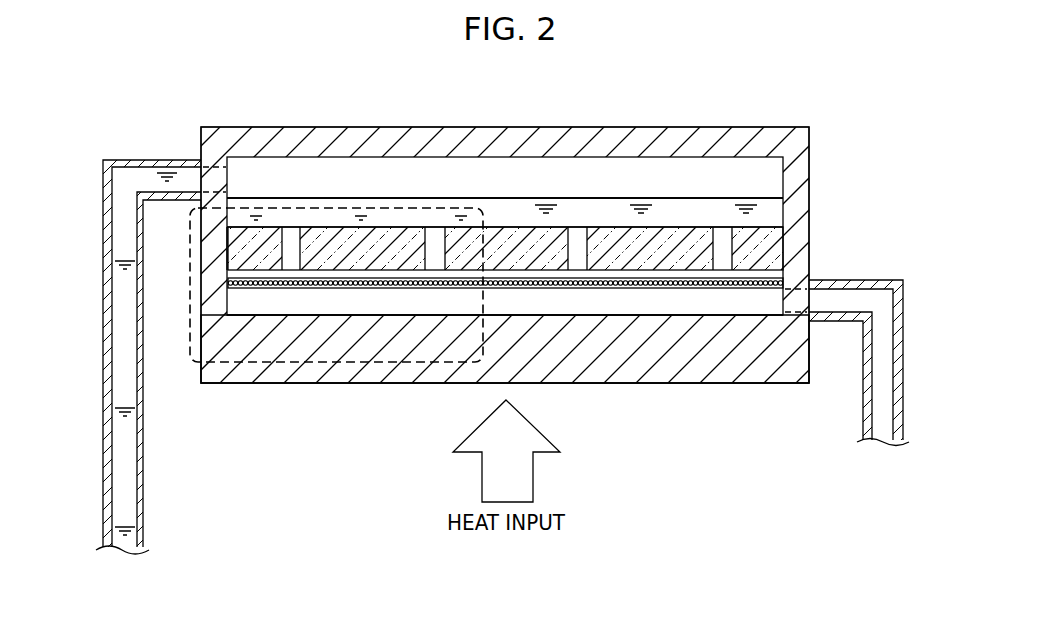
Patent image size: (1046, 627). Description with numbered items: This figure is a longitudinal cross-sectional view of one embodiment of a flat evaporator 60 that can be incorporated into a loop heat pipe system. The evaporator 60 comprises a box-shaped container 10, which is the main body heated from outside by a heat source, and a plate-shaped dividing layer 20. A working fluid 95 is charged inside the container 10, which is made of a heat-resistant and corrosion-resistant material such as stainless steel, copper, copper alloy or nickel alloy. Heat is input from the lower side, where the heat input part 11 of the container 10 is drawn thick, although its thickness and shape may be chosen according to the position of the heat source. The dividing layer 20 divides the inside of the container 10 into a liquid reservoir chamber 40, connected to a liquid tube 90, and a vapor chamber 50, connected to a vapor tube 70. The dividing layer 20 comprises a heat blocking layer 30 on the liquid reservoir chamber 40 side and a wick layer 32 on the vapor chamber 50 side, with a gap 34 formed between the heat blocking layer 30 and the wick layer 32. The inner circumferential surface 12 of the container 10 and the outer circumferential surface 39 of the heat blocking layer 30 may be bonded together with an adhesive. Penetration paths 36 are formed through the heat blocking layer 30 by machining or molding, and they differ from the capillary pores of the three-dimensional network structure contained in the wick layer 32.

The container 10 is at (680, 132).
The heat input part 11 is at (640, 384).
The inner circumferential surface 12 is at (233, 237).
The dividing layer 20 is at (545, 234).
The heat blocking layer 30 is at (778, 231).
The wick layer 32 is at (543, 268).
The gap 34 is at (779, 248).
The penetration path 36 is at (292, 262).
The outer circumferential surface 39 is at (233, 253).
The liquid reservoir chamber 40 is at (494, 188).
The vapor chamber 50 is at (504, 310).
The evaporator 60 is at (813, 123).
The vapor tube 70 is at (843, 303).
The liquid tube 90 is at (142, 180).
The working fluid 95 is at (778, 213).